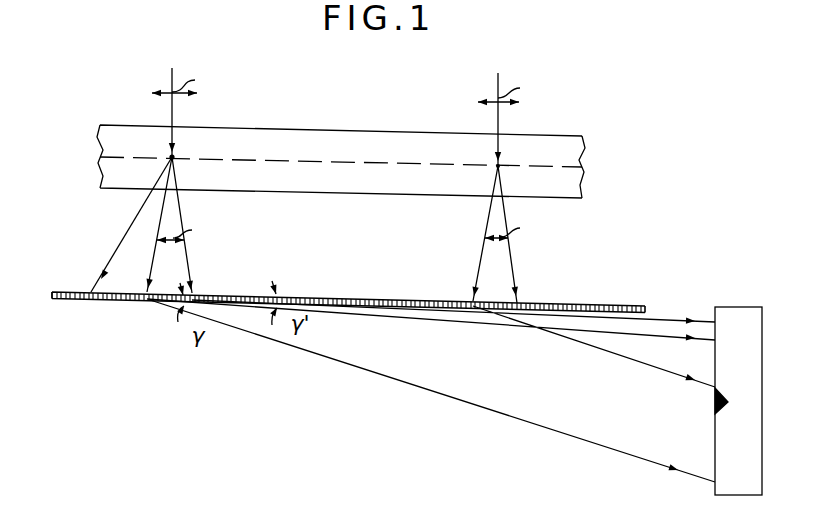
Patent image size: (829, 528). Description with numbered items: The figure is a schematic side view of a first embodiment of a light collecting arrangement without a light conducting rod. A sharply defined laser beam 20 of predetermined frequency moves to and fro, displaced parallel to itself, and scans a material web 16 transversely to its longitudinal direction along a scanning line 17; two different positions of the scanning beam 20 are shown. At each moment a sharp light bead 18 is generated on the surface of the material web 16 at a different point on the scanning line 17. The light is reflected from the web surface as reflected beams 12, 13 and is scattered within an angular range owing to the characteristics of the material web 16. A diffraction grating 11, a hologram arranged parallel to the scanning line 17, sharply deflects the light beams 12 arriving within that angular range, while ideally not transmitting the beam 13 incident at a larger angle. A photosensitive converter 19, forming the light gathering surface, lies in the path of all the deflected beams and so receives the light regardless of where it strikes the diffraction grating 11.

The diffraction grating 11 is at (367, 298).
The reflected beams 12 is at (158, 218).
The reflected beam 13 is at (110, 260).
The material web 16 is at (370, 138).
The scanning line 17 is at (297, 157).
The light bead 18 is at (172, 157).
The photosensitive converter 19 is at (730, 320).
The laser beam 20 is at (172, 113).